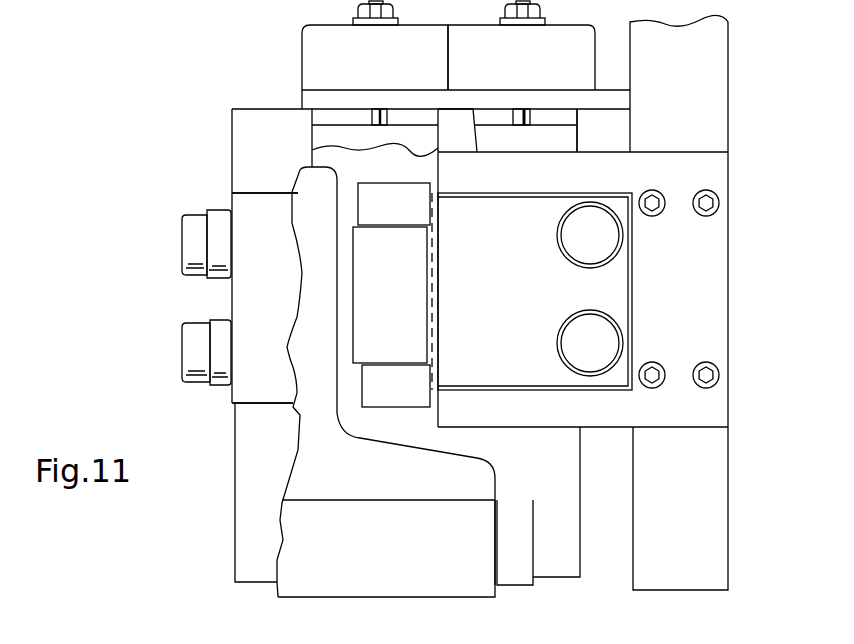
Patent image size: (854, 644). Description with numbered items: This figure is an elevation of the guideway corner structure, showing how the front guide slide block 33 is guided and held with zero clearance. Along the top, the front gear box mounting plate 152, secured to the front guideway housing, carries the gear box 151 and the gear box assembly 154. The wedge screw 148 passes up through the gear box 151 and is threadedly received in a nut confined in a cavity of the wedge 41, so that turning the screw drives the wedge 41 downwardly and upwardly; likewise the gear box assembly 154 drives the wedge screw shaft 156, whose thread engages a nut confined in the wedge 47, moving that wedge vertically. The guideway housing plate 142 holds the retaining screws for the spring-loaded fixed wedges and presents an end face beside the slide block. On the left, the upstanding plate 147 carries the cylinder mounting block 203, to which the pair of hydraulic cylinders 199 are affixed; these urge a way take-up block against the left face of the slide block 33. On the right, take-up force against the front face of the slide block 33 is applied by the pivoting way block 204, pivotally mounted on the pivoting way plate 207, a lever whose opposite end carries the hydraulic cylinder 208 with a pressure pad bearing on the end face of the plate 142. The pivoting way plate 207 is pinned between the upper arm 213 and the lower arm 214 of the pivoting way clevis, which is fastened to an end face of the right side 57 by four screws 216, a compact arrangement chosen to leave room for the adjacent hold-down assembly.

The front guide slide block 33 is at (412, 432).
The wedge 41 is at (500, 142).
The wedge 47 is at (327, 137).
The right side 57 is at (718, 113).
The guideway housing plate 142 is at (613, 125).
The upstanding plate 147 is at (248, 158).
The wedge screw 148 is at (532, 120).
The gear box 151 is at (536, 57).
The front gear box mounting plate 152 is at (318, 102).
The gear box assembly 154 is at (396, 60).
The wedge screw shaft 156 is at (372, 110).
The hydraulic cylinders 199 is at (190, 246).
The cylinder mounting block 203 is at (245, 300).
The pivoting way block 204 is at (415, 215).
The pivoting way plate 207 is at (530, 310).
The hydraulic cylinder 208 is at (608, 242).
The upper arm 213 is at (561, 186).
The lower arm 214 is at (574, 420).
The screws 216 is at (713, 200).